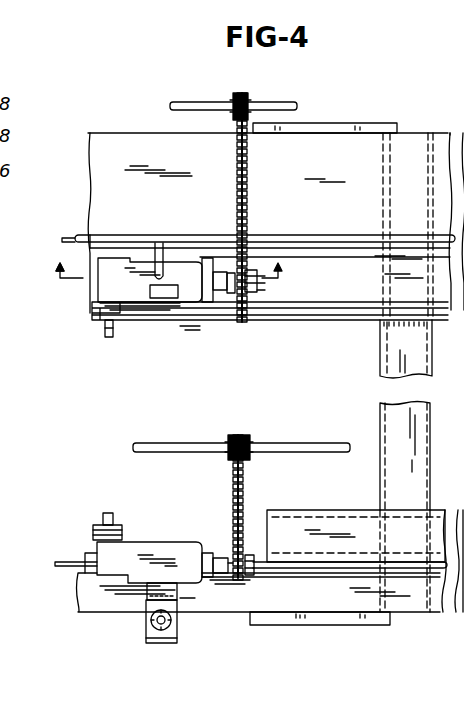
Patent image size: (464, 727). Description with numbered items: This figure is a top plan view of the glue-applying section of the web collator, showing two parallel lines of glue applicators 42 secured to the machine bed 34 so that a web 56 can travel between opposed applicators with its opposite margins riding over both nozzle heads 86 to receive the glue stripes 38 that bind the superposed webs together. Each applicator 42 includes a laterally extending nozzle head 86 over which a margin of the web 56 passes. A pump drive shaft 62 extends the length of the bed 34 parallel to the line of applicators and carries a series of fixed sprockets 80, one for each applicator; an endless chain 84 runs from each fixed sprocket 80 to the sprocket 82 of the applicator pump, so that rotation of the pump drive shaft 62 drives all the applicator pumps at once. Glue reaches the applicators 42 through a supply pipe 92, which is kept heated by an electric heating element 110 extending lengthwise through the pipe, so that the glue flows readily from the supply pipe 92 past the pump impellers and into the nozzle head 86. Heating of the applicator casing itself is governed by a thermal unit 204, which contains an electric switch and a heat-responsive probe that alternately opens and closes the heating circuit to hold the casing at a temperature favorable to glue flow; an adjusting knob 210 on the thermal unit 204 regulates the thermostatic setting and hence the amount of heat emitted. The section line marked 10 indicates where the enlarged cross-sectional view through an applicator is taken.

The trolley assembly 10 is at (175, 284).
The bed 34 is at (441, 133).
The glue stripes 38 is at (10, 359).
The glue applicator 42 is at (180, 262).
The web 56 is at (10, 407).
The pump drive shaft 62 is at (276, 102).
The fixed sprocket 80 is at (241, 93).
The applicator pump sprocket 82 is at (243, 322).
The endless chain 84 is at (250, 200).
The nozzle head 86 is at (108, 340).
The supply pipe 92 is at (115, 242).
The electric heating element 110 is at (68, 238).
The thermal unit 204 is at (175, 298).
The adjusting knob 210 is at (160, 643).